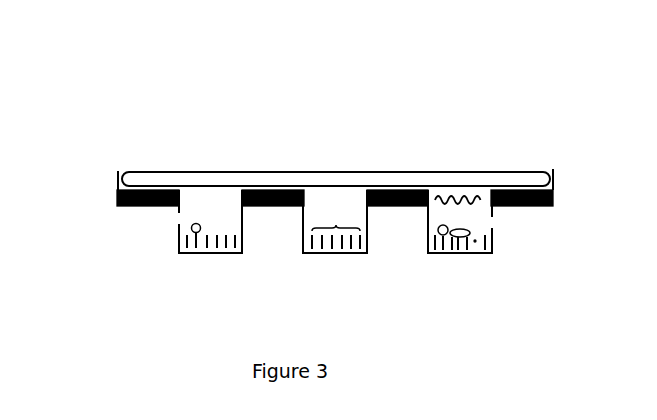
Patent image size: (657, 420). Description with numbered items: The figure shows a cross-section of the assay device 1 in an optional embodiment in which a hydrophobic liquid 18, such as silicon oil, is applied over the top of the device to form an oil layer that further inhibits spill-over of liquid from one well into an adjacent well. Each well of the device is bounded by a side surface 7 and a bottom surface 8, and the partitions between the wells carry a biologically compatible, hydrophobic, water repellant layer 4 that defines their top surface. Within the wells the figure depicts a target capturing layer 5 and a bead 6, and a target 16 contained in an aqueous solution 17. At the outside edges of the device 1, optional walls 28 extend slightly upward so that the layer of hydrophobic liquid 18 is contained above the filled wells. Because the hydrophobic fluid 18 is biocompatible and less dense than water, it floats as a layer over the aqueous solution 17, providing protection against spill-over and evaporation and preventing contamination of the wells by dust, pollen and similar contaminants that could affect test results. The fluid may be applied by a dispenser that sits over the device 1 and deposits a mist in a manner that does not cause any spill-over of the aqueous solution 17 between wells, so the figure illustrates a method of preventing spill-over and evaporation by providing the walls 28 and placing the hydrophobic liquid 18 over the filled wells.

The device 1 is at (190, 68).
The walls 28 is at (118, 172).
The hydrophobic liquid 18 is at (412, 177).
The water repellant layer 4 is at (275, 208).
The bottom surface 8 is at (209, 261).
The side surface 7 is at (179, 220).
The bead 6 is at (199, 225).
The target capturing layer 5 is at (336, 220).
The target 16 is at (465, 232).
The aqueous solution 17 is at (477, 223).